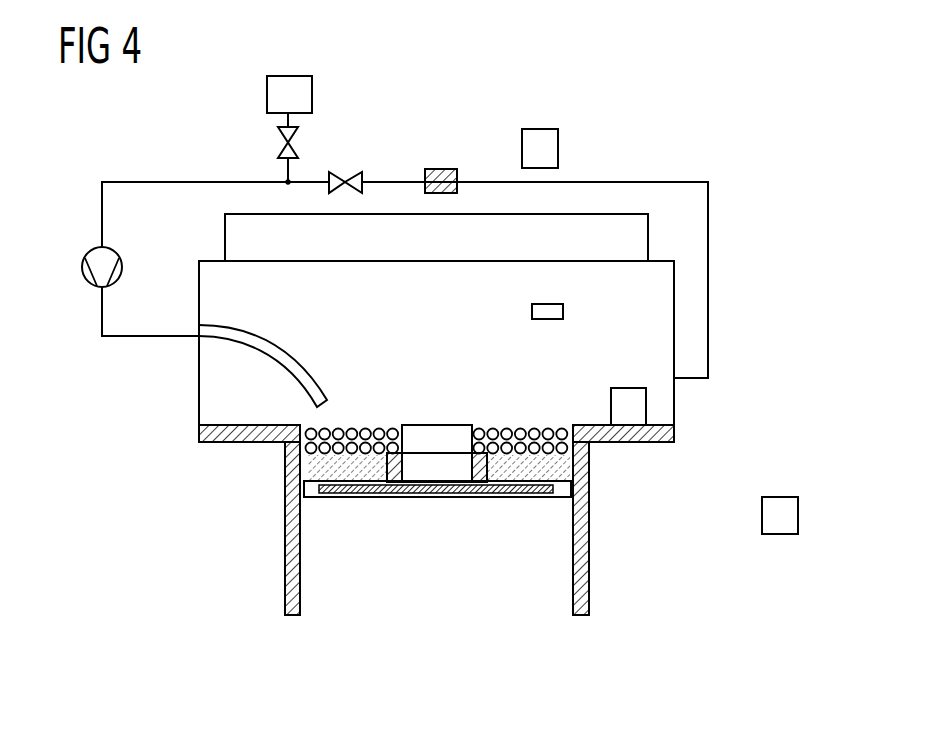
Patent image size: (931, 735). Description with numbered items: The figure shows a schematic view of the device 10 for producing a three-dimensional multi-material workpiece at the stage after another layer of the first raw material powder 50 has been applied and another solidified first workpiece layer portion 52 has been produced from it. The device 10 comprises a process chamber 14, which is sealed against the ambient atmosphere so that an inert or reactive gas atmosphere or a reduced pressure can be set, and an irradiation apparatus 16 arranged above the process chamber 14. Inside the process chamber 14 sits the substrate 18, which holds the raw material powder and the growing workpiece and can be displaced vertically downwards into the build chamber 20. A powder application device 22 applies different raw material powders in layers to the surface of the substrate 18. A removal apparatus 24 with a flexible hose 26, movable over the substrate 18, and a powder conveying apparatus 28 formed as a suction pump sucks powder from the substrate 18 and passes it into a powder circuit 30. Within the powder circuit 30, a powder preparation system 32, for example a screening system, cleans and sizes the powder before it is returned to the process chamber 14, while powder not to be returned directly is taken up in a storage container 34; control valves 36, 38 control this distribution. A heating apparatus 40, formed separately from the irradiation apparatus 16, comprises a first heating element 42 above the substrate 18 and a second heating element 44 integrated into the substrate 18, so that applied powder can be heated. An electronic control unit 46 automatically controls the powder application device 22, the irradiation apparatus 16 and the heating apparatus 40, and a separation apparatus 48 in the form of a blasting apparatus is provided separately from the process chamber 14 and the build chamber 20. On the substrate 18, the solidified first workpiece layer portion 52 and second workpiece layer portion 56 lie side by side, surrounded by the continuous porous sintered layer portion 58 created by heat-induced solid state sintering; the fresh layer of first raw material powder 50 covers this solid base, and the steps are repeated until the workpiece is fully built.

The device 10 is at (762, 232).
The process chamber 14 is at (207, 405).
The irradiation apparatus 16 is at (480, 230).
The substrate 18 is at (313, 497).
The build chamber 20 is at (307, 583).
The powder application device 22 is at (646, 407).
The removal apparatus 24 is at (187, 325).
The flexible hose 26 is at (242, 337).
The powder conveying apparatus 28 is at (97, 247).
The powder circuit 30 is at (160, 182).
The powder preparation system 32 is at (440, 169).
The storage container 34 is at (312, 96).
The control valve 36 is at (280, 145).
The control valve 38 is at (340, 172).
The heating apparatus 40 is at (603, 368).
The first heating element 42 is at (550, 304).
The second heating element 44 is at (545, 497).
The control unit 46 is at (558, 148).
The separation apparatus 48 is at (778, 497).
The first raw material powder 50 is at (573, 447).
The first workpiece layer portion 52 is at (420, 472).
The second workpiece layer portion 56 is at (477, 525).
The sintered layer portion 58 is at (310, 458).